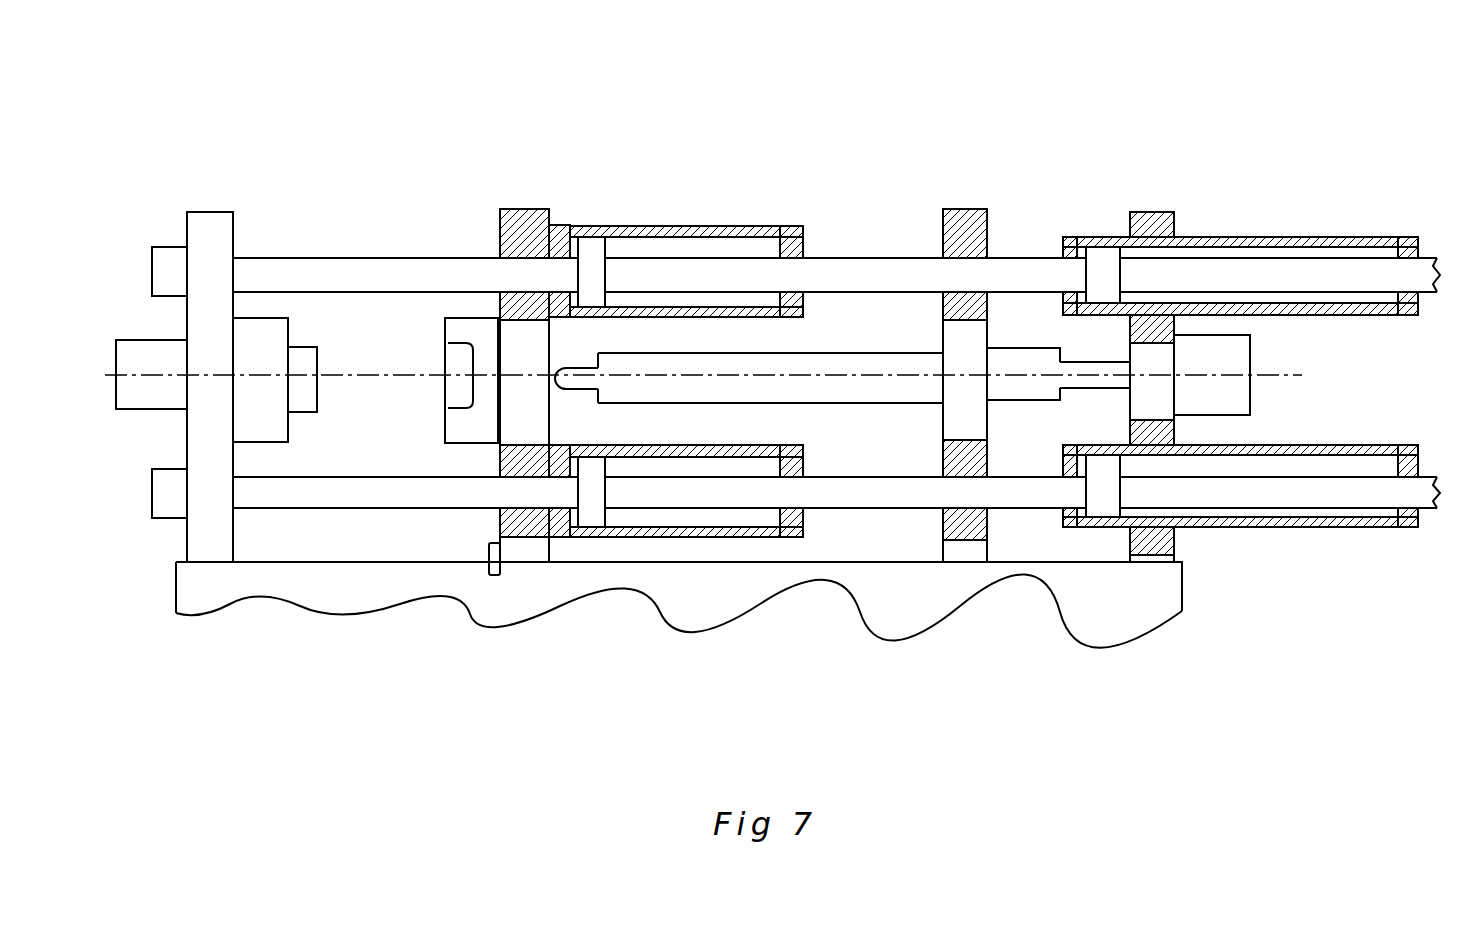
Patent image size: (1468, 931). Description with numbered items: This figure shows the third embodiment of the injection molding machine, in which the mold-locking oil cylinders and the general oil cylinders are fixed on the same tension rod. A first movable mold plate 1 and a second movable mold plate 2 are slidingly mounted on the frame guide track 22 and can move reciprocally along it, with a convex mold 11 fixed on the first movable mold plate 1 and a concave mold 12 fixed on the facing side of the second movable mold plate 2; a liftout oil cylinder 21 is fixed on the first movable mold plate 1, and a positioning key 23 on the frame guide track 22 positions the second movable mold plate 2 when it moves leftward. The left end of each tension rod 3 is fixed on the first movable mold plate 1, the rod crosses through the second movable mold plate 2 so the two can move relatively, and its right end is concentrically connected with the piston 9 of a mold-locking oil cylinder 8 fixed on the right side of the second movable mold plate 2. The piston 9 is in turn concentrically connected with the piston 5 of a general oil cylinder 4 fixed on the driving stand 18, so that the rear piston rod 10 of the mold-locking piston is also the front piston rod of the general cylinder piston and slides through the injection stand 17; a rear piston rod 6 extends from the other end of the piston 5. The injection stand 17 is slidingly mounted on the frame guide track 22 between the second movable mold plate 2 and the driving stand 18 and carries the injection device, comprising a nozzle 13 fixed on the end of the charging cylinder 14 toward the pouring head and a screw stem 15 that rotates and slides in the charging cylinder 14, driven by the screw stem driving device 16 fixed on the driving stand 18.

The first movable mold plate 1 is at (165, 310).
The second movable mold plate 2 is at (493, 309).
The tension rod 3 is at (405, 282).
The general oil cylinder 4 is at (1167, 293).
The piston 5 is at (1057, 287).
The rear piston rod 6 is at (1280, 283).
The mold-locking oil cylinder 8 is at (686, 297).
The piston 9 is at (556, 293).
The rear piston rod 10 is at (845, 282).
The convex mold 11 is at (249, 250).
The concave mold 12 is at (413, 252).
The nozzle 13 is at (626, 559).
The charging cylinder 14 is at (829, 549).
The screw stem 15 is at (1031, 556).
The screw stem driving device 16 is at (1254, 538).
The injection stand 17 is at (906, 310).
The driving stand 18 is at (1116, 310).
The liftout oil cylinder 21 is at (112, 338).
The frame guide track 22 is at (679, 656).
The positioning key 23 is at (533, 648).